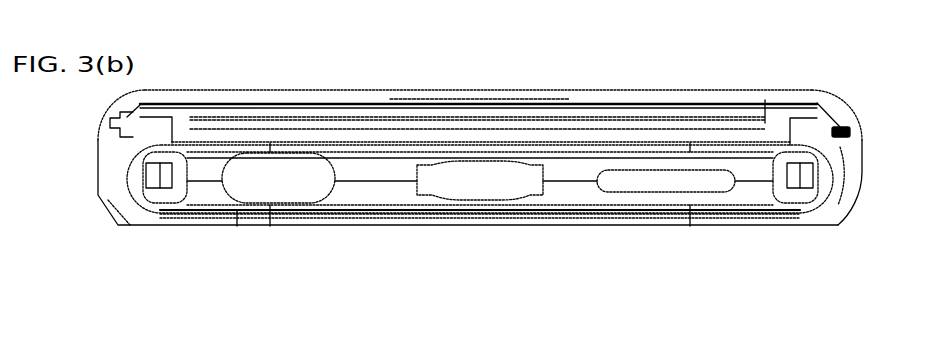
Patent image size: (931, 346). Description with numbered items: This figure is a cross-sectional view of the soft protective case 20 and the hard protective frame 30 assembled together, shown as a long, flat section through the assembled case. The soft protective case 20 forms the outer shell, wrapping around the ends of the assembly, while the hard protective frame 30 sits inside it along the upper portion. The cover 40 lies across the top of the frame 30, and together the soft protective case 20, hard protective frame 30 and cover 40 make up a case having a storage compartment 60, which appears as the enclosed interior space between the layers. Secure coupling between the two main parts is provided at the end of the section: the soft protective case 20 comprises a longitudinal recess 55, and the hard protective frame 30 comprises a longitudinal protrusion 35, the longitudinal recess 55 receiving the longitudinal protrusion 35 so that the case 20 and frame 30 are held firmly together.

The soft protective case 20 is at (113, 182).
The hard protective frame 30 is at (180, 128).
The longitudinal protrusion 35 is at (843, 127).
The cover 40 is at (313, 97).
The longitudinal recess 55 is at (859, 172).
The storage compartment 60 is at (470, 127).